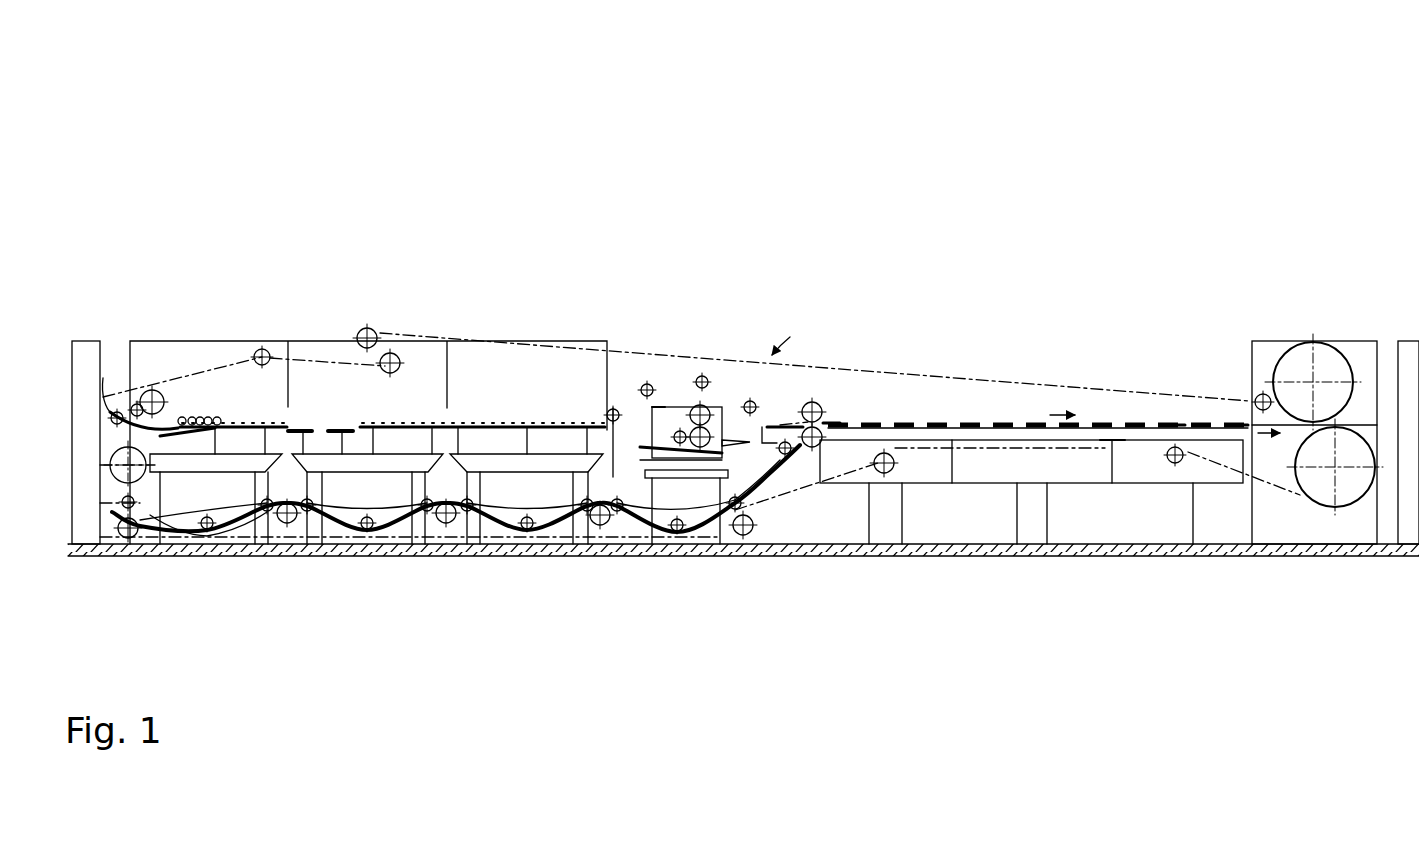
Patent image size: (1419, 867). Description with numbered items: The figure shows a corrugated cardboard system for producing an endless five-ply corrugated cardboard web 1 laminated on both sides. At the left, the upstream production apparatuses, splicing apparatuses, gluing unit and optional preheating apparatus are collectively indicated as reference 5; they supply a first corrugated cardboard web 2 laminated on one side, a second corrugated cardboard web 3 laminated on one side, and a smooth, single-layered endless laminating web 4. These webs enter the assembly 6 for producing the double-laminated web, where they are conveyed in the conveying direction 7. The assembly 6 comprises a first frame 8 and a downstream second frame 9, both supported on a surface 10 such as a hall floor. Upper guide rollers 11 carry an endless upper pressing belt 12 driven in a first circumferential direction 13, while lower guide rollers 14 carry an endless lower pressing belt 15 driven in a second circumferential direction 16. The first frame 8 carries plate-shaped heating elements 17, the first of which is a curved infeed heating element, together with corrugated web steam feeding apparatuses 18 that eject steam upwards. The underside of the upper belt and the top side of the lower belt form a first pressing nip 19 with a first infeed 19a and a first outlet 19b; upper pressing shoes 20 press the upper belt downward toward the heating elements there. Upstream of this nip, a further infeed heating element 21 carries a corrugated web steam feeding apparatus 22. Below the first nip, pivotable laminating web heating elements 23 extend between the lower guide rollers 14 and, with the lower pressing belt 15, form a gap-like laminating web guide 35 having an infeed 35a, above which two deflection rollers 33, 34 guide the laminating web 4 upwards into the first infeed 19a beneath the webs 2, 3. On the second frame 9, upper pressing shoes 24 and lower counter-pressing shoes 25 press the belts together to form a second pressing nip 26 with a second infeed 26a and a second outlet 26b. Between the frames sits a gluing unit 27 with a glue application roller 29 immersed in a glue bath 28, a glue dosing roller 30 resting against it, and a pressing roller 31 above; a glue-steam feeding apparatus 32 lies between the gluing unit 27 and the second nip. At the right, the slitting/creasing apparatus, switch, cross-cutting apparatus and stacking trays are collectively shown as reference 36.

The five-ply corrugated cardboard web laminated on both sides 1 is at (1377, 340).
The first corrugated cardboard web laminated on one side 2 is at (103, 388).
The second corrugated cardboard web laminated on one side 3 is at (112, 478).
The endless laminating web 4 is at (122, 510).
The upstream production and splicing apparatuses 5 is at (85, 336).
The assembly for producing a corrugated cardboard web laminated on both sides 6 is at (790, 337).
The conveying direction 7 is at (1105, 438).
The first frame 8 is at (253, 336).
The second frame 9 is at (970, 490).
The surface 10 is at (1000, 556).
The upper guide rollers 11 is at (148, 392).
The upper pressing belt 12 is at (1002, 387).
The first circumferential direction 13 is at (818, 403).
The lower guide rollers 14 is at (207, 517).
The lower pressing belt 15 is at (1292, 497).
The second circumferential direction 16 is at (1262, 440).
The heating elements 17 is at (256, 500).
The corrugated web steam feeding apparatuses 18 is at (342, 423).
The first pressing nip 19 is at (180, 416).
The first infeed 19a is at (205, 424).
The first outlet 19b is at (665, 399).
The upper pressing shoes 20 is at (558, 424).
The infeed heating element 21 is at (118, 530).
The corrugated web steam feeding apparatus 22 is at (122, 404).
The laminating web heating elements 23 is at (240, 515).
The upper pressing shoes 24 is at (973, 420).
The lower counter-pressing shoes 25 is at (1070, 432).
The second pressing nip 26 is at (1172, 422).
The second infeed 26a is at (835, 422).
The second outlet 26b is at (1240, 422).
The gluing unit 27 is at (702, 376).
The glue bath 28 is at (738, 510).
The glue application roller 29 is at (768, 424).
The glue dosing roller 30 is at (750, 400).
The pressing roller 31 is at (785, 441).
The glue-steam feeding apparatus 32 is at (822, 430).
The deflection roller 33 is at (200, 532).
The deflection roller 34 is at (213, 528).
The laminating web guide 35 is at (380, 528).
The infeed of the laminating web guide 35a is at (145, 520).
The downstream finishing apparatuses 36 is at (1410, 336).